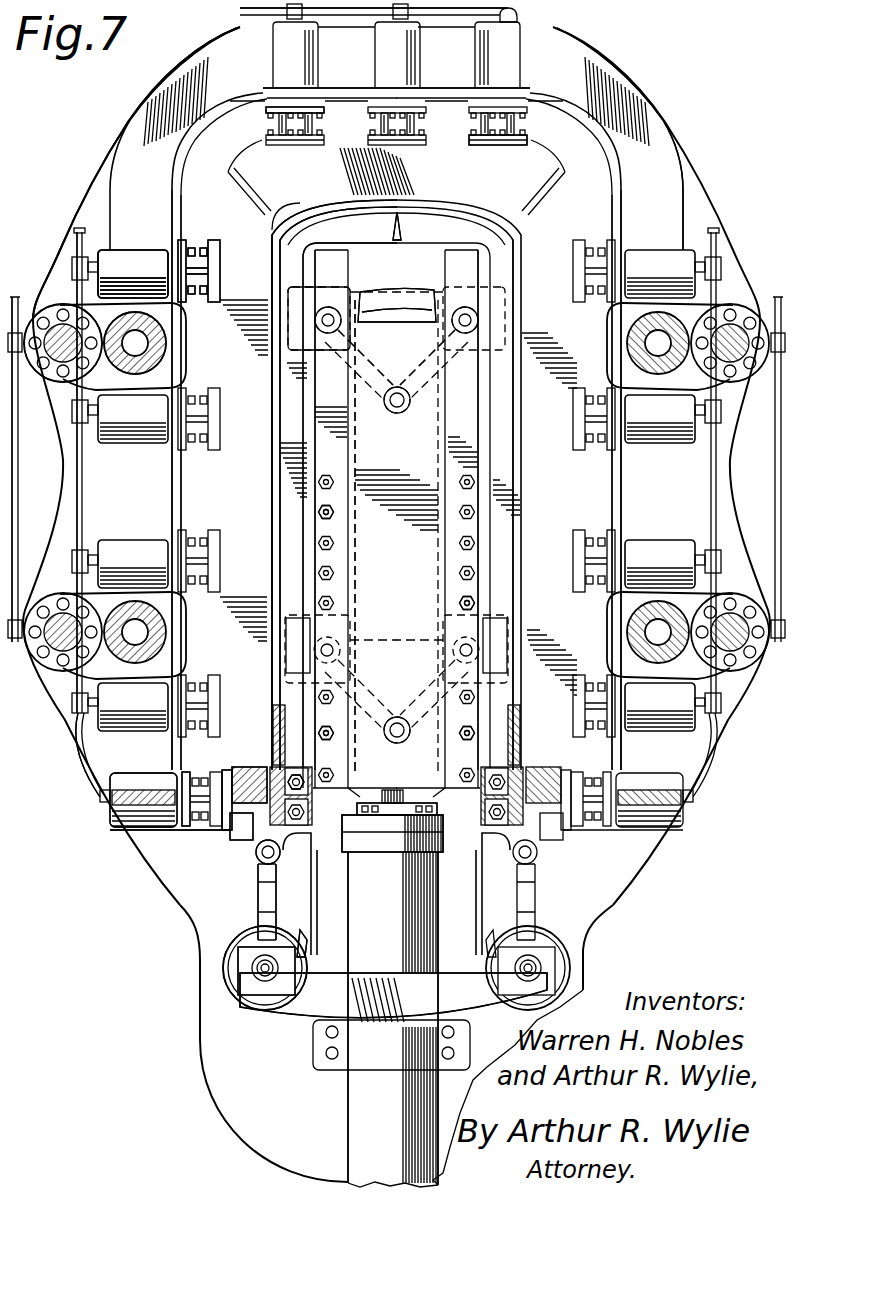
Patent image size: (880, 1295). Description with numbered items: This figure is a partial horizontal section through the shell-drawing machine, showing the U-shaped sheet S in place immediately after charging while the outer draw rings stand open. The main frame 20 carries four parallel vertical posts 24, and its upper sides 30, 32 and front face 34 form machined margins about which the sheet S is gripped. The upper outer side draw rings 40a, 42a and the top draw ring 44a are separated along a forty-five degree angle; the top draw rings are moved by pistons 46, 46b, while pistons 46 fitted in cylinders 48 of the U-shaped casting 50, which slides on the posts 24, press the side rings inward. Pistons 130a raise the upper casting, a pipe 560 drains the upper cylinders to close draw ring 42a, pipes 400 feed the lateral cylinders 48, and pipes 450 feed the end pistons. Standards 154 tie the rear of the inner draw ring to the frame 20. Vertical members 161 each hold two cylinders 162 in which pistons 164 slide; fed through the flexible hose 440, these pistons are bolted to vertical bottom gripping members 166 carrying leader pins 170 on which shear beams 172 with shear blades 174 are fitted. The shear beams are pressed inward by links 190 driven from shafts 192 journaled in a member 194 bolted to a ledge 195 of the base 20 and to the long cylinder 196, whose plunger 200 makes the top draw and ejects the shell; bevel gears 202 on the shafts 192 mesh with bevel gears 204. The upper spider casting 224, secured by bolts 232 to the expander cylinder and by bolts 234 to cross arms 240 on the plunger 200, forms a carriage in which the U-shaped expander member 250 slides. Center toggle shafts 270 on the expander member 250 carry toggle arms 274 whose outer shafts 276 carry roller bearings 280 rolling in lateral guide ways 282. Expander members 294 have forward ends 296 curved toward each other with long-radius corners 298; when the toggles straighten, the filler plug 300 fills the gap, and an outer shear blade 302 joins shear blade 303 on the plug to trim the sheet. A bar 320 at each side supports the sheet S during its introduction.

The main frame 20 is at (93, 172).
The vertical posts 24 is at (160, 343).
The upper side 30 is at (282, 372).
The upper side 32 is at (505, 430).
The front face 34 is at (320, 222).
The upper outer draw ring 40a is at (255, 507).
The upper outer draw ring 42a is at (562, 514).
The top draw ring 44a is at (452, 150).
The pistons 46 is at (198, 255).
The pistons 46b is at (385, 125).
The cylinders 48 is at (130, 258).
The U-shaped casting 50 is at (655, 153).
The pistons 130a is at (50, 307).
The standards 154 is at (288, 807).
The vertical members 161 is at (140, 795).
The cylinders 162 is at (118, 829).
The piston 164 is at (203, 826).
The vertical bottom gripping members 166 is at (225, 772).
The leader pins 170 is at (245, 840).
The shear beams 172 is at (257, 855).
The shear blades 174 is at (248, 770).
The links 190 is at (257, 903).
The shafts 192 is at (252, 975).
The member 194 is at (310, 1005).
The ledge 195 is at (455, 884).
The long cylinder 196 is at (360, 885).
The plunger 200 is at (383, 830).
The bevel gears 202 is at (225, 962).
The bevel gears 204 is at (300, 935).
The upper spider casting 224 is at (413, 470).
The bolts 232 is at (333, 543).
The bolts 234 is at (326, 736).
The cross arms 240 is at (352, 802).
The U-shaped expander member 250 is at (357, 560).
The center toggle shafts 270 is at (387, 412).
The toggle arms 274 is at (420, 360).
The shafts 276 is at (467, 305).
The roller bearings 280 is at (290, 306).
The guide ways 282 is at (316, 310).
The expander member 294 is at (290, 548).
The forward ends 296 is at (373, 215).
The corners 298 is at (278, 236).
The filler plug 300 is at (418, 262).
The outer steel shear blade 302 is at (398, 240).
The shear blade 303 is at (390, 308).
The bar 320 is at (274, 425).
The pipes 400 is at (76, 460).
The flexible hose 440 is at (76, 736).
The pipes 450 is at (443, 14).
The pipe 560 is at (17, 488).
The sheet S is at (413, 210).